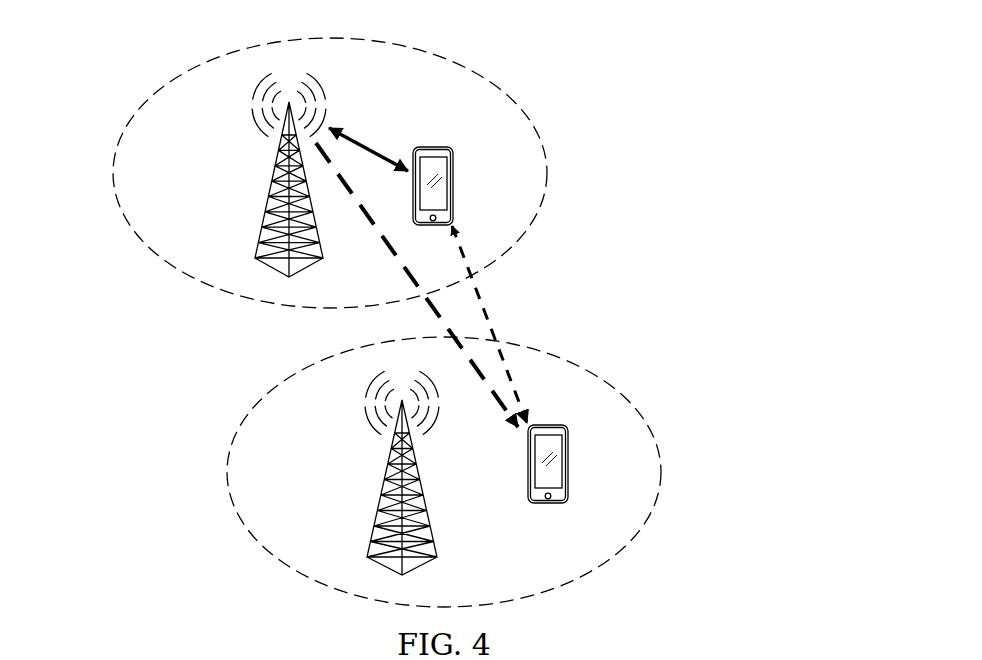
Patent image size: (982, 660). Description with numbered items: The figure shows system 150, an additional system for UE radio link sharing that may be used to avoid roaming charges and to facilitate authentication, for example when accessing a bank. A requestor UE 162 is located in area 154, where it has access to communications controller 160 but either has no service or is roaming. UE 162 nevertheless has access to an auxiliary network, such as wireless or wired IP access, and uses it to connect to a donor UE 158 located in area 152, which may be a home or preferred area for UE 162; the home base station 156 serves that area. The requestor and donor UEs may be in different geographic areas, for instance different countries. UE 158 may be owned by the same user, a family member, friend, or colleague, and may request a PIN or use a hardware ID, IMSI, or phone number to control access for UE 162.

The system 150 is at (672, 88).
The area 152 is at (115, 163).
The area 154 is at (658, 495).
The home base station 156 is at (272, 188).
The UE 158 is at (455, 185).
The communications controller 160 is at (384, 487).
The UE 162 is at (570, 465).